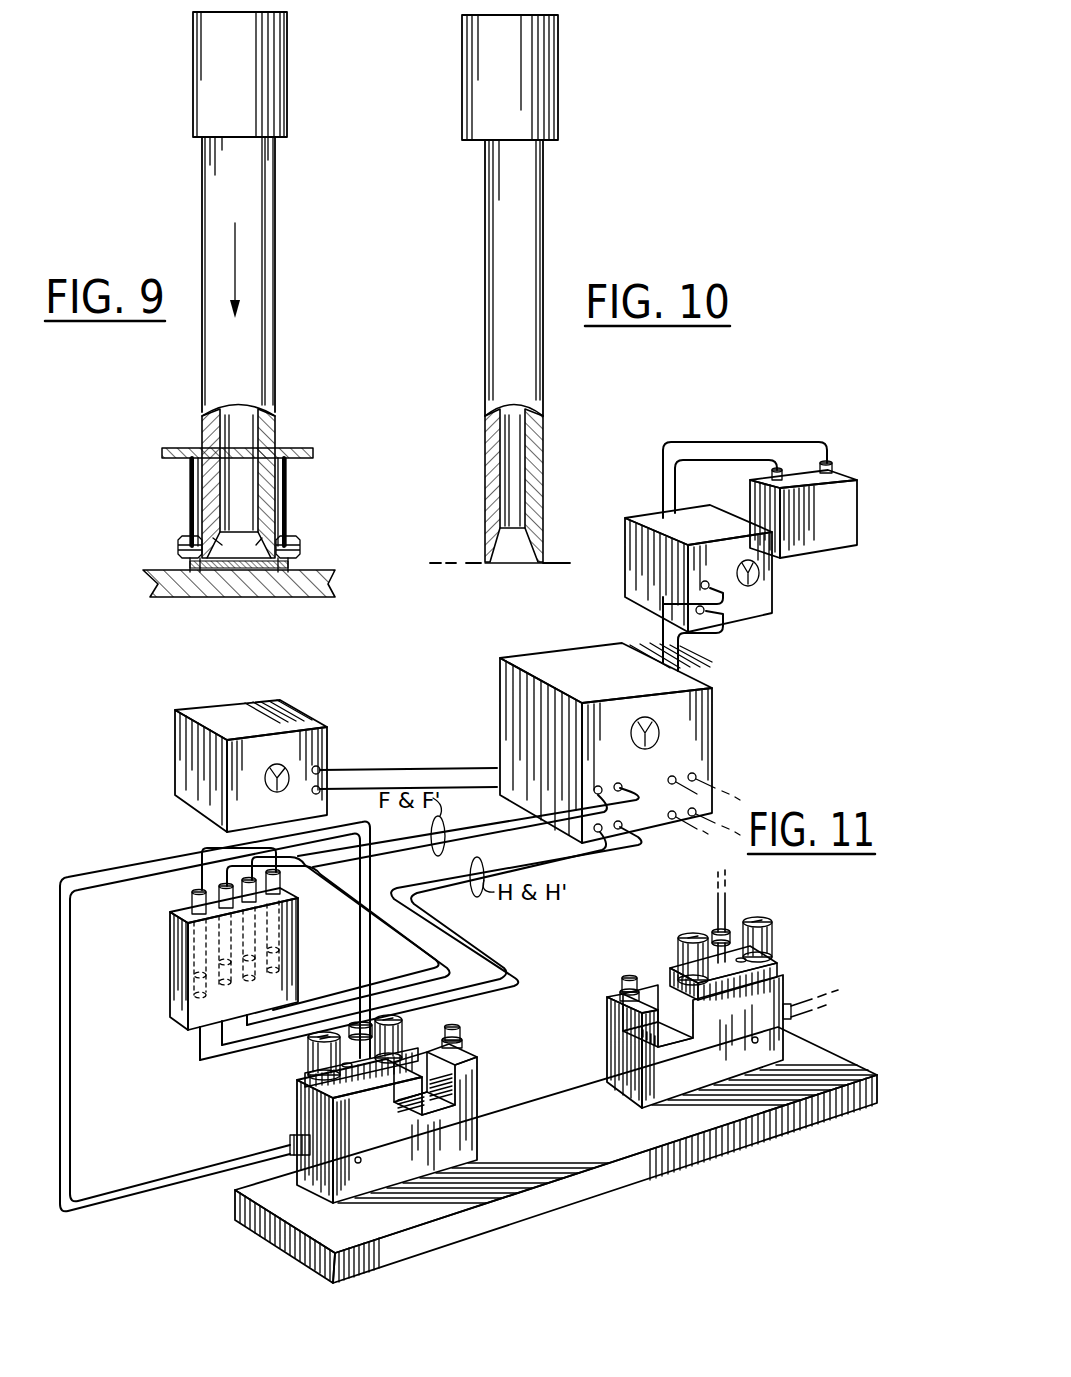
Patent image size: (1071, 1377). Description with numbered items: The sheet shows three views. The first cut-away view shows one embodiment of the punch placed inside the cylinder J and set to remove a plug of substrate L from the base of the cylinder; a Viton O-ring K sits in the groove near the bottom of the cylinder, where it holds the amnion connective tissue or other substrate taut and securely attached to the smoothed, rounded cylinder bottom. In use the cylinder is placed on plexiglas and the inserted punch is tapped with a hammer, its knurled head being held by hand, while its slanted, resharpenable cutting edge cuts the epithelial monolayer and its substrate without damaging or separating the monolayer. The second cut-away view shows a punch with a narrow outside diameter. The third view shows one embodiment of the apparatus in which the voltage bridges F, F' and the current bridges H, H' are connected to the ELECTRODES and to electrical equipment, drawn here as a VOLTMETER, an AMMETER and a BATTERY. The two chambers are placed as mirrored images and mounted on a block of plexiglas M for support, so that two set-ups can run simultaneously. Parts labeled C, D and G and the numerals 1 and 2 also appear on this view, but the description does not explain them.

In FIG. 9, the cylinder J is at (284, 500).
In FIG. 9, the Viton O-ring K is at (292, 548).
In FIG. 9, the plug of substrate L is at (230, 576).
In FIG. 11, the voltage bridge F is at (341, 950).
In FIG. 11, the voltage bridge F' is at (215, 1018).
In FIG. 11, the current bridge H is at (386, 950).
In FIG. 11, the current bridge H' is at (215, 1021).
In FIG. 11, the electrode terminal D is at (312, 1058).
In FIG. 11, the test cell C is at (313, 1086).
In FIG. 11, the hole G is at (362, 1156).
In FIG. 11, the block of plexiglas M is at (547, 1144).
In FIG. 11, the switch position 1 terminals 1 is at (608, 788).
In FIG. 11, the switch position 2 terminals 2 is at (704, 784).
In FIG. 11, the voltmeter VOLTMETER is at (168, 746).
In FIG. 11, the ammeter AMMETER is at (770, 599).
In FIG. 11, the battery BATTERY is at (853, 526).
In FIG. 11, the electrodes ELECTRODES is at (184, 1036).